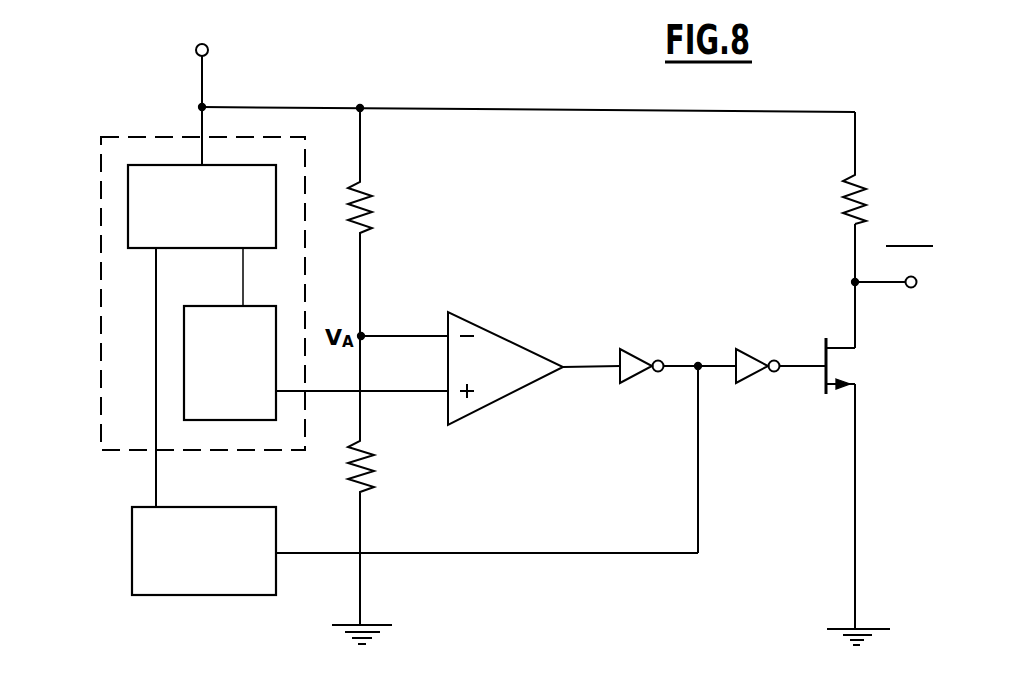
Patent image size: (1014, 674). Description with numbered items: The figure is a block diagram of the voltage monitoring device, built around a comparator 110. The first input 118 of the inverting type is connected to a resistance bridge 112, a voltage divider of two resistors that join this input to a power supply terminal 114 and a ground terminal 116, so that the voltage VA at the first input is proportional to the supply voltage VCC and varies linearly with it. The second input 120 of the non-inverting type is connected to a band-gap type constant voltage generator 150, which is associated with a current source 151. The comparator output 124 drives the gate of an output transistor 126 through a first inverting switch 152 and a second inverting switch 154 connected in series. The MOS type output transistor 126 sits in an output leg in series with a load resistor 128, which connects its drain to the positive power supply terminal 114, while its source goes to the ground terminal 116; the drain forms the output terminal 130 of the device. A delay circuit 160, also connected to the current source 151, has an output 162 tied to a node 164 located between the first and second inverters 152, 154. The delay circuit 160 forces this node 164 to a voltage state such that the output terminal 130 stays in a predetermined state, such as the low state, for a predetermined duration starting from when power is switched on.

The comparator 110 is at (525, 360).
The resistance bridge 112 is at (388, 208).
The power supply terminal 114 is at (208, 47).
The ground terminal 116 is at (380, 627).
The first input 118 is at (440, 330).
The second input 120 is at (440, 396).
The comparator output 124 is at (572, 372).
The output transistor 126 is at (832, 374).
The load resistor 128 is at (866, 186).
The output terminal 130 is at (912, 289).
The band-gap type constant voltage generator 150 is at (184, 332).
The current source 151 is at (137, 198).
The first inverting switch 152 is at (640, 362).
The second inverting switch 154 is at (758, 362).
The delay circuit 160 is at (160, 551).
The output of the delay circuit 162 is at (282, 558).
The node 164 is at (702, 372).